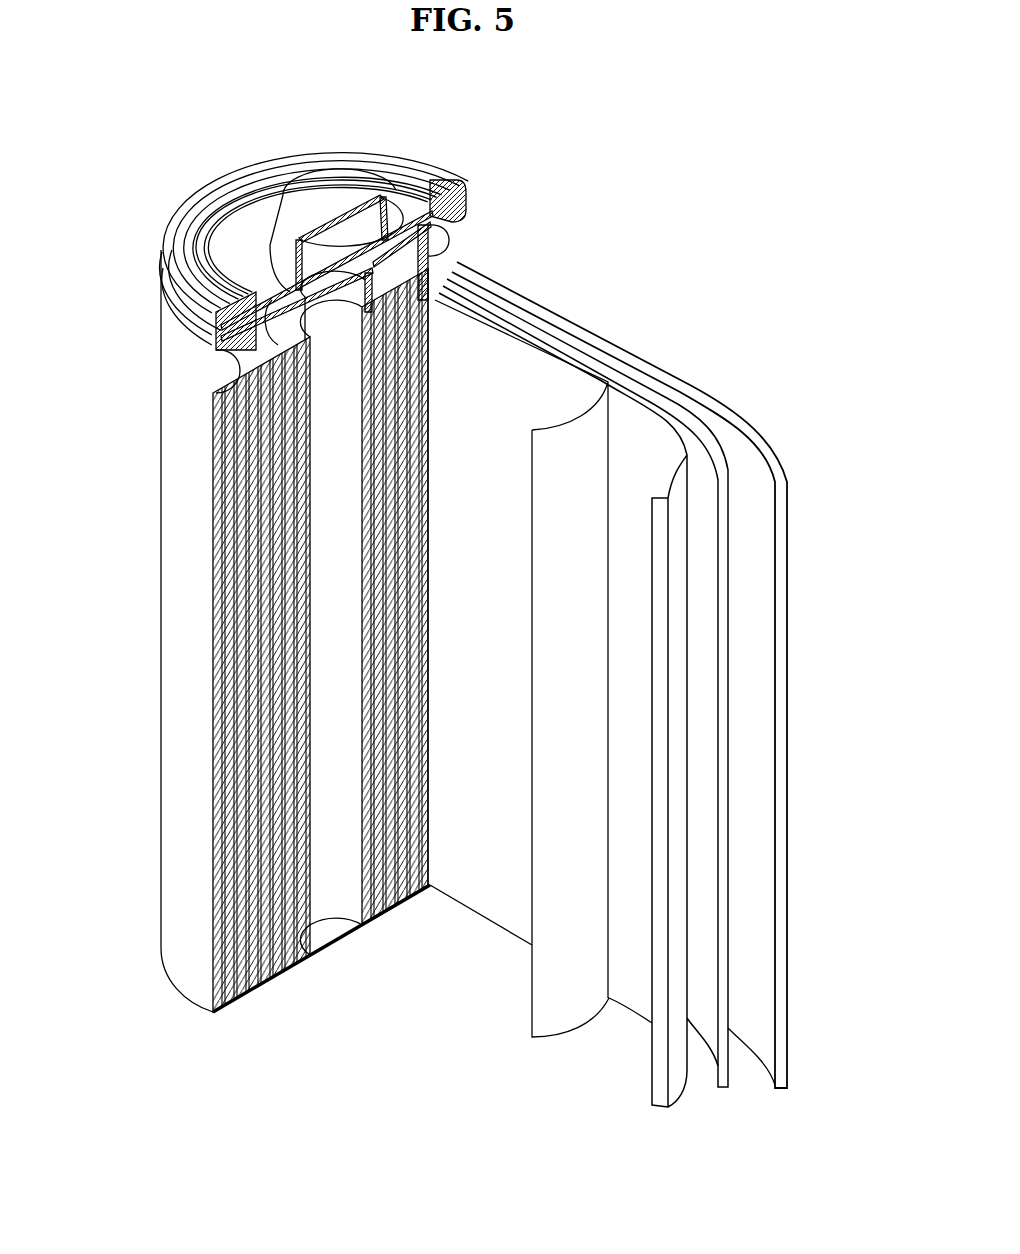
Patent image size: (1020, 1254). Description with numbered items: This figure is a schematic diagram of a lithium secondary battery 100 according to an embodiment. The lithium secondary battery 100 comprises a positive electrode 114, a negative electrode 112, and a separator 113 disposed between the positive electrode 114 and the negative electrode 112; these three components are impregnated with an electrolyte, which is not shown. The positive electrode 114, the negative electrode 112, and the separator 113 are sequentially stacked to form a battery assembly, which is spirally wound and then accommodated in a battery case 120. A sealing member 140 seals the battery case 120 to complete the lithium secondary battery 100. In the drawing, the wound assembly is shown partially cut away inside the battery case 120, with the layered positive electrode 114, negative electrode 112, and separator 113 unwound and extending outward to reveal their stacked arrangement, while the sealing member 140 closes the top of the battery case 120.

The lithium secondary battery 100 is at (644, 201).
The negative electrode 112 is at (786, 577).
The separator 113 is at (555, 350).
The positive electrode 114 is at (640, 400).
The battery case 120 is at (167, 648).
The sealing member 140 is at (305, 196).